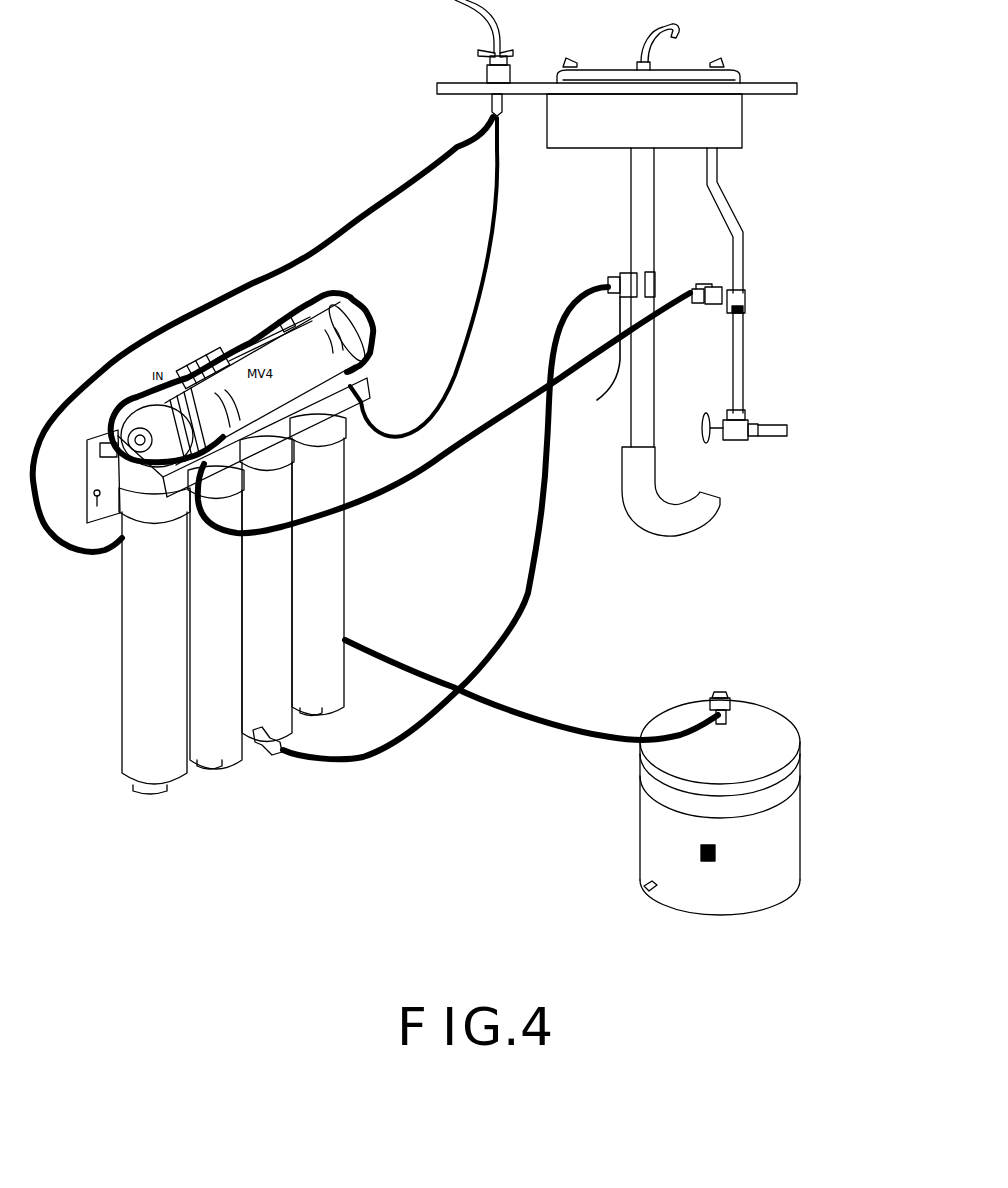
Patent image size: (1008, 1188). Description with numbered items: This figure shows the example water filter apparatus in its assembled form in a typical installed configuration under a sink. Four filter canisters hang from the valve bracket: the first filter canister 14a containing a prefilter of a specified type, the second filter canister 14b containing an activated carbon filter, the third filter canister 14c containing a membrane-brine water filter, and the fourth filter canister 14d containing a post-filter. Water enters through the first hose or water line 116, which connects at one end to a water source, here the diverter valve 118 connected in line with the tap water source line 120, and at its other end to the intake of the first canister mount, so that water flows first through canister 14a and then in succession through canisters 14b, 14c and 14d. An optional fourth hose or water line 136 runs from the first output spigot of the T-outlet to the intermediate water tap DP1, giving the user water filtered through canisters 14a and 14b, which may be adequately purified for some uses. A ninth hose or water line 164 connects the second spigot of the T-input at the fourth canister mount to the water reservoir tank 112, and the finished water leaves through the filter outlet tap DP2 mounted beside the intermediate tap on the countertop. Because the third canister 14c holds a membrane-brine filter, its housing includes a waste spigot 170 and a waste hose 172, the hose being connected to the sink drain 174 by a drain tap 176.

The first filter canister 14a is at (130, 783).
The second filter canister 14b is at (217, 753).
The third filter canister 14c is at (257, 727).
The fourth filter canister 14d is at (332, 683).
The water reservoir tank 112 is at (790, 830).
The first hose or water line 116 is at (443, 463).
The diverter valve 118 is at (708, 305).
The tap water source line 120 is at (745, 255).
The fourth hose or water line 136 is at (53, 533).
The ninth hose or water line 164 is at (472, 345).
The waste spigot 170 is at (277, 752).
The waste hose 172 is at (538, 560).
The sink drain 174 is at (627, 253).
The drain tap 176 is at (598, 372).
The intermediate water tap DP1 is at (471, 45).
The filter outlet tap DP2 is at (531, 43).